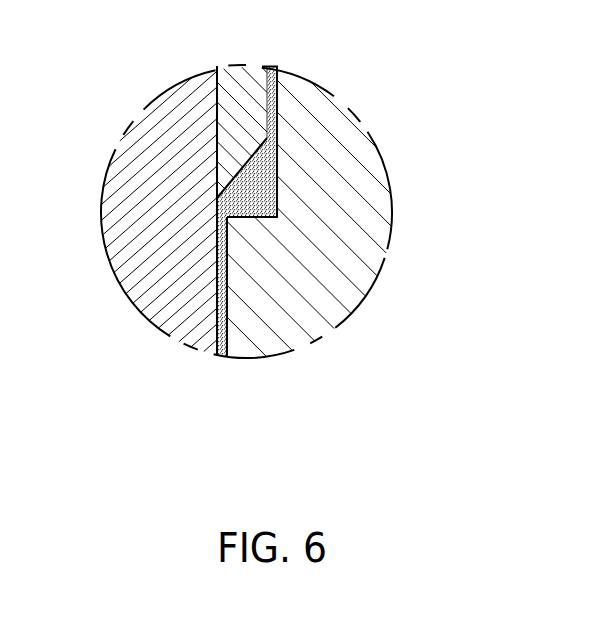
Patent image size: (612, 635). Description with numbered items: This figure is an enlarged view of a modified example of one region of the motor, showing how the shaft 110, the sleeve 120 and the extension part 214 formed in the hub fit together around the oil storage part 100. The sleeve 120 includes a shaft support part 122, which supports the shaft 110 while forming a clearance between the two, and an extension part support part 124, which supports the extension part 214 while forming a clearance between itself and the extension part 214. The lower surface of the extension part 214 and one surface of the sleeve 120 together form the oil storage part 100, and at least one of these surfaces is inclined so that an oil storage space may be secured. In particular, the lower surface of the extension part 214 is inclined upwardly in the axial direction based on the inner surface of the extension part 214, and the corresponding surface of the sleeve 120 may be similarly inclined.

The oil storage part 100 is at (261, 192).
The shaft 110 is at (152, 298).
The sleeve 120 is at (342, 283).
The shaft support part 122 is at (225, 337).
The extension part support part 124 is at (270, 170).
The extension part 214 is at (241, 83).